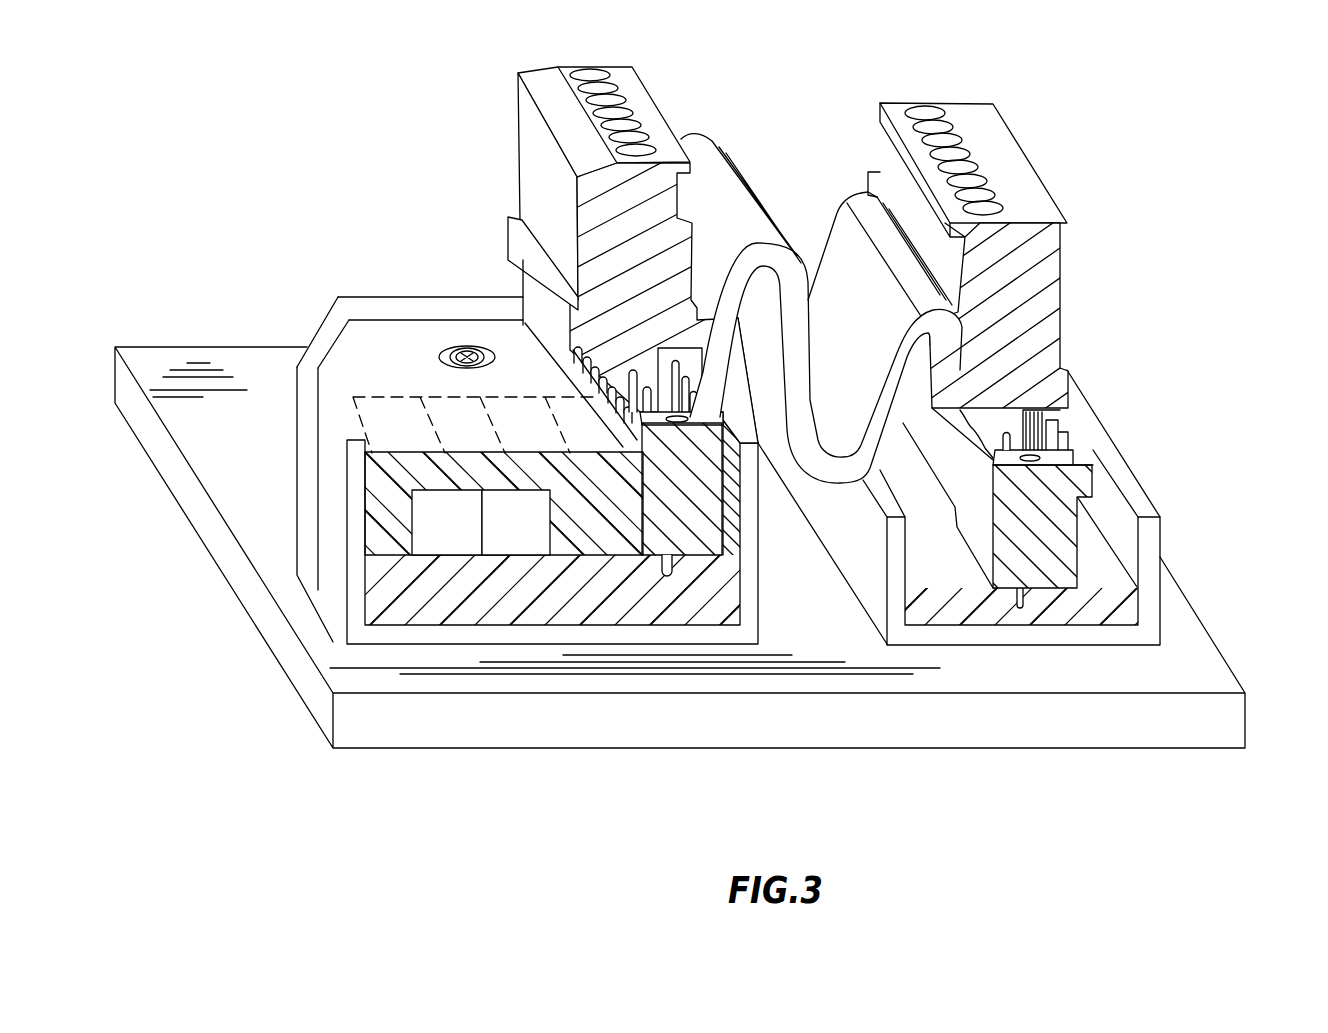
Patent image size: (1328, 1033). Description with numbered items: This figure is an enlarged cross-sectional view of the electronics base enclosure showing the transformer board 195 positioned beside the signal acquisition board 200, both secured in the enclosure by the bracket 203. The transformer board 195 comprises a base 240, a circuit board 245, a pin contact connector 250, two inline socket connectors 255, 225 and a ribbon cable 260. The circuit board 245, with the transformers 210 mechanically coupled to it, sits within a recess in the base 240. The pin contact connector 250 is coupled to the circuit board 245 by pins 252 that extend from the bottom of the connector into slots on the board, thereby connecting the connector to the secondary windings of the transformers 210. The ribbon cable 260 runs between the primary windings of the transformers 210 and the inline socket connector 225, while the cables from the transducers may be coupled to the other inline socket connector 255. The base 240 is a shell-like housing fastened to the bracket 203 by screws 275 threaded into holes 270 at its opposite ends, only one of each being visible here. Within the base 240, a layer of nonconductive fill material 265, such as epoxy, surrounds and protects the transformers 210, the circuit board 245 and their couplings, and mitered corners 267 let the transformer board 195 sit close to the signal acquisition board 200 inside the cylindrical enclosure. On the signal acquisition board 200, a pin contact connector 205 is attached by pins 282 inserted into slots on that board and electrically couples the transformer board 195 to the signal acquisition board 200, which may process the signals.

The transformer board 195 is at (740, 105).
The ribbon cable 260 is at (733, 160).
The inline socket connector 255 is at (527, 152).
The hole 270 is at (490, 356).
The screw 275 is at (455, 347).
The nonconductive fill material 265 is at (365, 348).
The mitered corner 267 is at (315, 332).
The inline socket connector 225 is at (1032, 285).
The pin contact connector 205 is at (1060, 510).
The base 240 is at (367, 630).
The transformer 210 is at (460, 530).
The circuit board 245 is at (563, 610).
The pin 252 is at (672, 577).
The pin contact connector 250 is at (697, 570).
The signal acquisition board 200 is at (923, 610).
The pin 282 is at (1020, 612).
The bracket 203 is at (1125, 725).